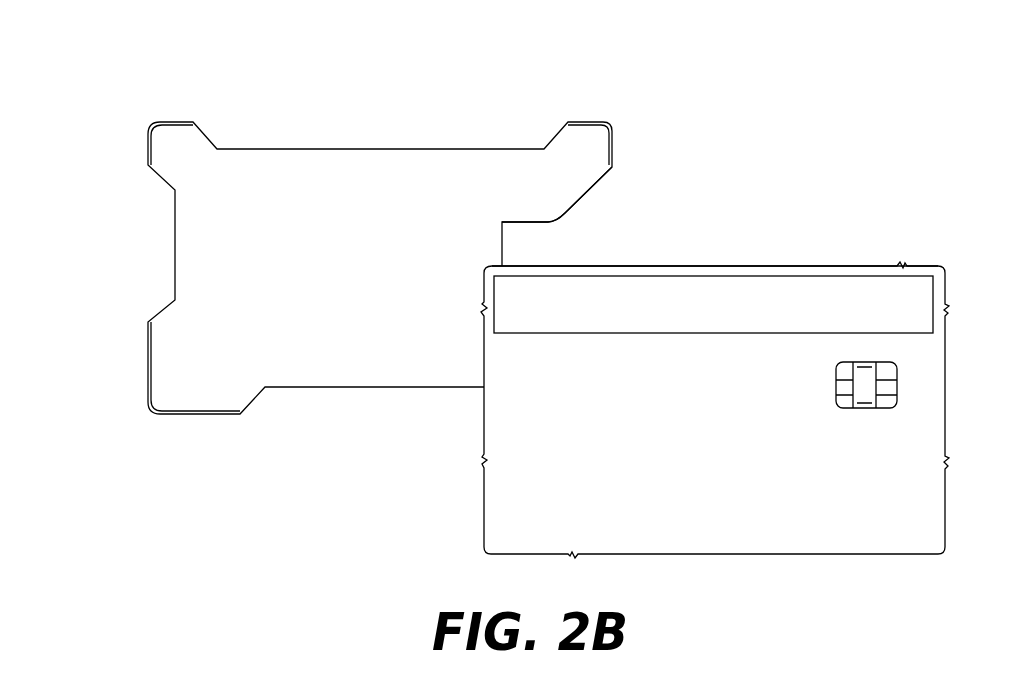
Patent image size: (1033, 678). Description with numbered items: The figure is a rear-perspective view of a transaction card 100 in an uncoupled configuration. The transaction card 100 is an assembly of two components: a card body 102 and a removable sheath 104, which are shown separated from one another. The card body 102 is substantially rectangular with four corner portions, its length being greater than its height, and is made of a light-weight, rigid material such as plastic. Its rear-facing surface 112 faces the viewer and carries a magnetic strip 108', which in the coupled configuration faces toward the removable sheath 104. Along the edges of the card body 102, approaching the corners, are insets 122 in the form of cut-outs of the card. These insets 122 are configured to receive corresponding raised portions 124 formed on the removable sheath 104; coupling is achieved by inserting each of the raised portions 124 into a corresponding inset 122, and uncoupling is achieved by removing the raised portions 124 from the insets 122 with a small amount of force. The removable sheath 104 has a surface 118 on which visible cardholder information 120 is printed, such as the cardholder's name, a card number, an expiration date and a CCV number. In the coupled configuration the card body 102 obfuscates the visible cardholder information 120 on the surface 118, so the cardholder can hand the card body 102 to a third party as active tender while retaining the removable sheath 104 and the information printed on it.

The transaction card 100 is at (118, 153).
The card body 102 is at (468, 447).
The removable sheath 104 is at (185, 385).
The magnetic strip 108' is at (713, 281).
The rear-facing surface 112 is at (728, 421).
The surface of the removable sheath 118 is at (380, 184).
The visible cardholder information 120 is at (467, 228).
The insets 122 is at (923, 273).
The raised portions 124 is at (582, 145).